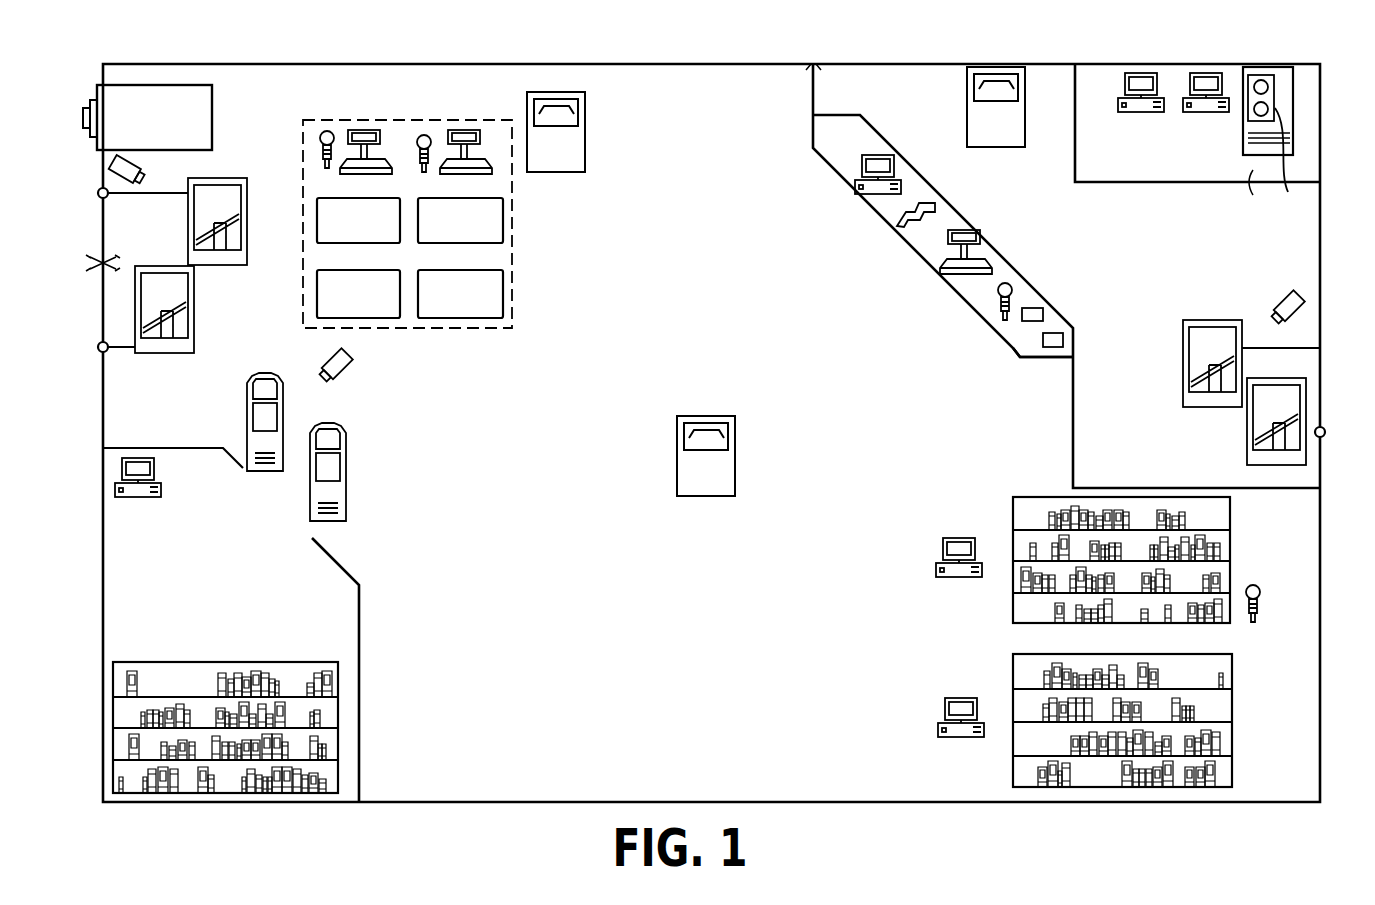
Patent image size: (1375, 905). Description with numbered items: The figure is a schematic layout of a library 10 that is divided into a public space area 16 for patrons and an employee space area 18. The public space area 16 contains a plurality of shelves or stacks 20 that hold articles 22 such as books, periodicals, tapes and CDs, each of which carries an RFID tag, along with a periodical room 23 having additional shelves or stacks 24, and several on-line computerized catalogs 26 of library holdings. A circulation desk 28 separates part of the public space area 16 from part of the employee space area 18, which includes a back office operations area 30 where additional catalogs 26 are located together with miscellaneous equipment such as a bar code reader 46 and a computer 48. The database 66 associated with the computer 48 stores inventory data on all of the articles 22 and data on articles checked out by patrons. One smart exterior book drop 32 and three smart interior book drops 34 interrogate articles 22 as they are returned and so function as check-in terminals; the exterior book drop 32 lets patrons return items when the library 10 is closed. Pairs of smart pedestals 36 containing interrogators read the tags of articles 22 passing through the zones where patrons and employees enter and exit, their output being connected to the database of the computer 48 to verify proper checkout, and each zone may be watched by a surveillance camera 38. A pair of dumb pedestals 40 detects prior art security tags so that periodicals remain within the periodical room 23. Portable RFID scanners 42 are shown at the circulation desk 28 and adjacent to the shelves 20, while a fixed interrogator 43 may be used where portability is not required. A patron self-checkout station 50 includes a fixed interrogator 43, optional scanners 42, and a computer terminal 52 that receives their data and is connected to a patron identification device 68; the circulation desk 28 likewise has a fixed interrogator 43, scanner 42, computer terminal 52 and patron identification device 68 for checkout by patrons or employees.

The library 10 is at (1327, 130).
The public space area 16 is at (565, 350).
The employee space area 18 is at (1125, 257).
The shelves or stacks 20 is at (1089, 615).
The articles 22 is at (1060, 497).
The periodical room 23 is at (359, 630).
The additional shelves or stacks 24 is at (318, 660).
The on-line computerized catalogs 26 is at (152, 470).
The circulation desk 28 is at (1003, 348).
The back office operations area 30 is at (1214, 183).
The exterior article return area or book drop 32 is at (214, 110).
The interior article return area or book drop 34 is at (583, 162).
The smart pedestals 36 is at (217, 267).
The surveillance camera 38 is at (148, 168).
The dumb pedestals 40 is at (283, 452).
The portable RFID scanner 42 is at (320, 133).
The fixed interrogator 43 is at (317, 213).
The bar code reader 46 is at (900, 222).
The computer 48 is at (1243, 126).
The patron self-checkout station 50 is at (338, 120).
The computer terminal 52 is at (387, 163).
The database 66 is at (1290, 163).
The patron identification device 68 is at (317, 291).